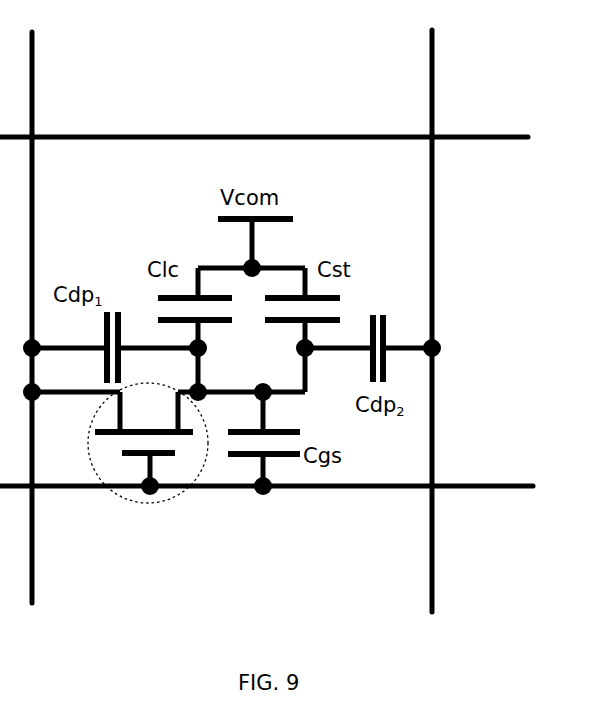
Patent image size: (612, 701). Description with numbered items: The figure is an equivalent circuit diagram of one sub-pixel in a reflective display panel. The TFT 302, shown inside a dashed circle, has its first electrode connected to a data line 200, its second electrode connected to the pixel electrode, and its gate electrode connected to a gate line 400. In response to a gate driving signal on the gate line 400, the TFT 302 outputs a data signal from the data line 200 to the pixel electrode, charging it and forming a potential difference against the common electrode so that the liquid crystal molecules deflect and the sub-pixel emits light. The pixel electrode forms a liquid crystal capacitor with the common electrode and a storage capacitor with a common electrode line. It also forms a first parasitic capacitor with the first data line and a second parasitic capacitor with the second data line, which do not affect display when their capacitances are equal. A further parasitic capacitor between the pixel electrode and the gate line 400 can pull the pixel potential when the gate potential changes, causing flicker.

The data line 200 is at (105, 648).
The TFT 302 is at (160, 502).
The gate line 400 is at (503, 490).